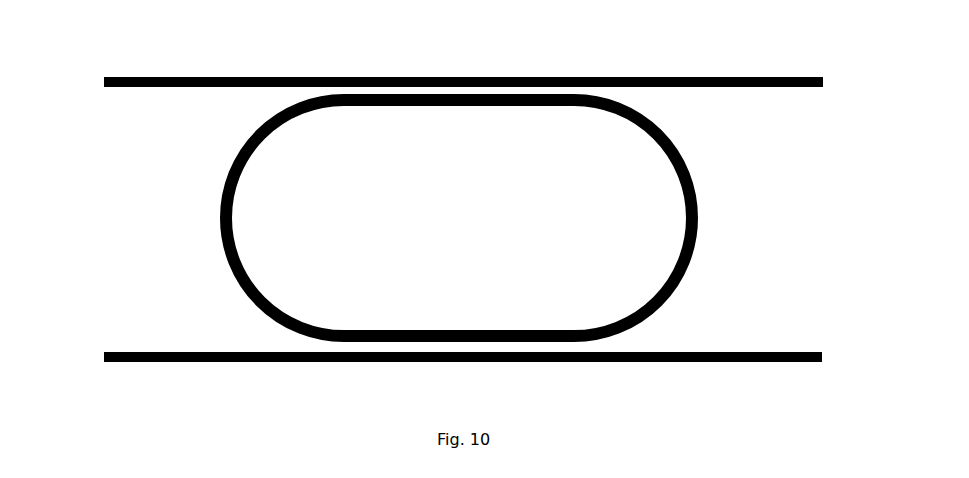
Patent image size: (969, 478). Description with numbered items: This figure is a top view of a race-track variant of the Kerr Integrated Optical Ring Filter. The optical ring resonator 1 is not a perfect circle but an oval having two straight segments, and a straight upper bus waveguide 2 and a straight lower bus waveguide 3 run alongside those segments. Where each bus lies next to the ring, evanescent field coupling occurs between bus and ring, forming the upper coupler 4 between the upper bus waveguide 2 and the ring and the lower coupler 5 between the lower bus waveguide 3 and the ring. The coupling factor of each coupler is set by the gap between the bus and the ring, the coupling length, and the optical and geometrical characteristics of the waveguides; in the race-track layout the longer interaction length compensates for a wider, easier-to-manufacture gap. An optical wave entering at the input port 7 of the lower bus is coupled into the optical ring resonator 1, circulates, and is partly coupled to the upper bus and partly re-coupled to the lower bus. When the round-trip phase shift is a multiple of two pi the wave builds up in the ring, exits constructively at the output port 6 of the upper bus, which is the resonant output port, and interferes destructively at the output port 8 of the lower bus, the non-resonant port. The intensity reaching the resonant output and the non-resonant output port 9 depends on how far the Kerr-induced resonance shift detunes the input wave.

The optical ring resonator 1 is at (712, 181).
The upper bus waveguide 2 is at (628, 63).
The lower bus waveguide 3 is at (627, 373).
The upper coupler 4 is at (459, 116).
The lower coupler 5 is at (460, 321).
The output port of the upper bus 6 is at (86, 73).
The input port of the lower bus 7 is at (88, 349).
The output port of the lower bus 8 is at (838, 347).
The non-resonant output port 9 is at (837, 73).